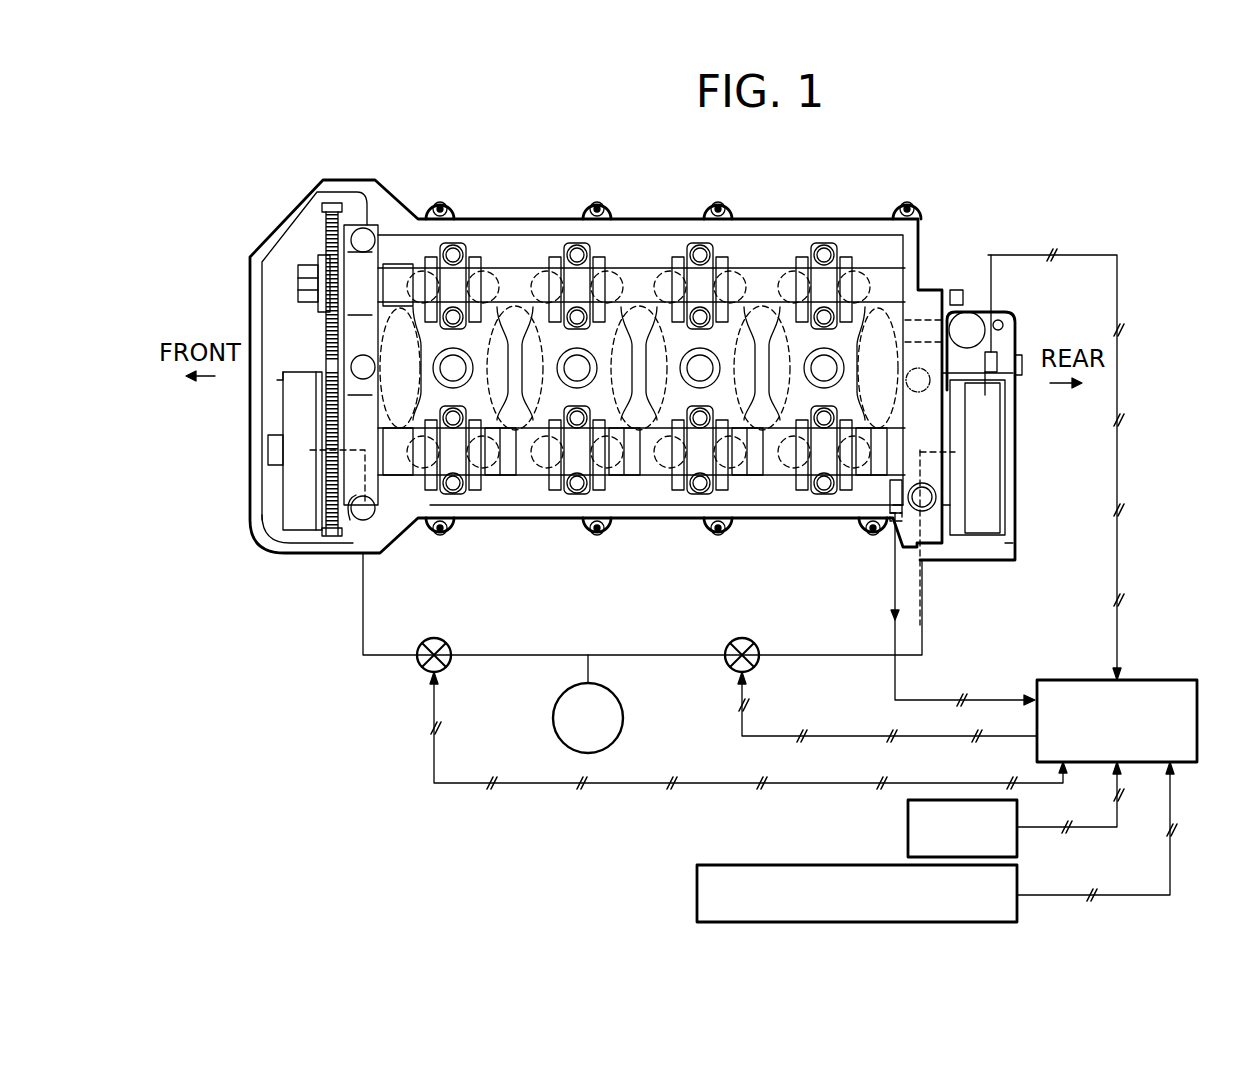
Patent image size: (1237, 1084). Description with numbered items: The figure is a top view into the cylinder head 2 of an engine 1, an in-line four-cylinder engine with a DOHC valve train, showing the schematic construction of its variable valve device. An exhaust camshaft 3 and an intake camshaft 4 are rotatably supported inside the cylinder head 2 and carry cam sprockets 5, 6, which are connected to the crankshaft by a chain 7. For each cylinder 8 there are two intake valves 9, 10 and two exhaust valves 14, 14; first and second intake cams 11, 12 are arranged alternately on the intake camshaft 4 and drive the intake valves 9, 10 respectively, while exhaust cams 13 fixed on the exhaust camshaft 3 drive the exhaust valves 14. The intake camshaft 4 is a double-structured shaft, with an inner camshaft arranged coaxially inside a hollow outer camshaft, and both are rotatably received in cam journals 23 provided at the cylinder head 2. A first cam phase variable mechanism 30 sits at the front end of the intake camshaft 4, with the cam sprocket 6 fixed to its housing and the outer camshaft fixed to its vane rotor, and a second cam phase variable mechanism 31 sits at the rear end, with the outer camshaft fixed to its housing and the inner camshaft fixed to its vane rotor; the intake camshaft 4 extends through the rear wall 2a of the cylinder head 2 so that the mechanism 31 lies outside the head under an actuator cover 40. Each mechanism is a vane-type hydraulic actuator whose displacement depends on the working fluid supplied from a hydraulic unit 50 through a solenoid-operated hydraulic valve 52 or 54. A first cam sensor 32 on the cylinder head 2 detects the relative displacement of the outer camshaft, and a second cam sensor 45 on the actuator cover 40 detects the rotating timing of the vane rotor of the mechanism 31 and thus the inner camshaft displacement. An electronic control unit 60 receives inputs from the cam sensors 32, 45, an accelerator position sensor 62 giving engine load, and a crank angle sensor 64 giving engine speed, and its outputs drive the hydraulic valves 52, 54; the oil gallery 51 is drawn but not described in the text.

The engine 1 is at (650, 182).
The cylinder head 2 is at (874, 218).
The rear wall 2a is at (937, 565).
The exhaust camshaft 3 is at (510, 268).
The intake camshaft 4 is at (784, 493).
The cam sprocket 5 is at (325, 223).
The cam sprocket 6 is at (360, 537).
The chain 7 is at (332, 202).
The cylinder 8 is at (763, 362).
The intake valve 9 is at (794, 492).
The intake valve 10 is at (854, 492).
The first intake cam 11 is at (802, 492).
The second intake cam 12 is at (846, 492).
The exhaust cam 13 is at (846, 257).
The exhaust valve 14 is at (846, 255).
The cam journal 23 is at (940, 468).
The first cam phase variable mechanism 30 is at (300, 530).
The second cam phase variable mechanism 31 is at (1000, 493).
The first cam sensor 32 is at (893, 525).
The actuator cover 40 is at (1017, 322).
The second cam sensor 45 is at (1000, 380).
The hydraulic unit 50 is at (556, 706).
The oil gallery 51 is at (870, 279).
The solenoid-operated hydraulic valve 52 is at (420, 664).
The solenoid-operated hydraulic valve 54 is at (728, 664).
The electronic control unit 60 is at (1162, 680).
The accelerator position sensor 62 is at (908, 827).
The crank angle sensor 64 is at (697, 890).